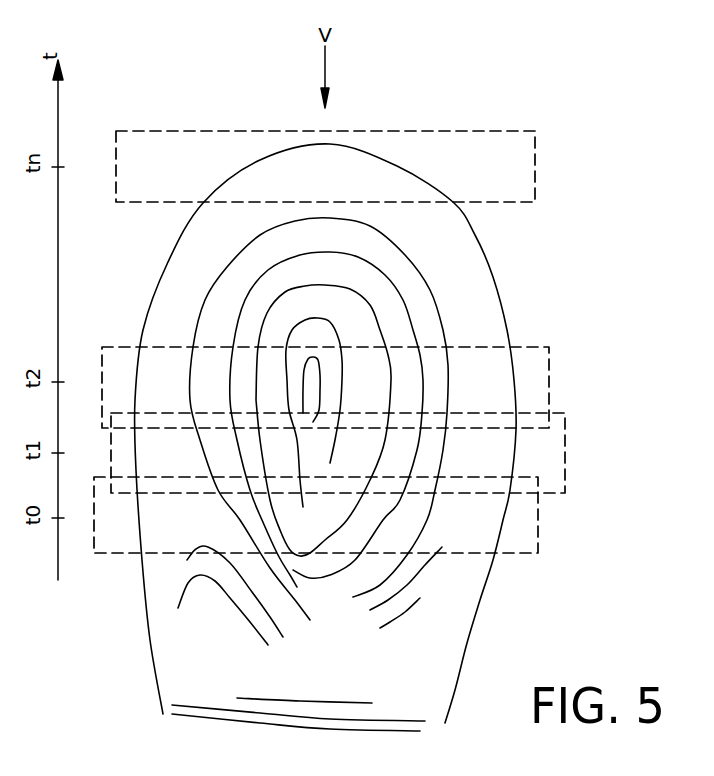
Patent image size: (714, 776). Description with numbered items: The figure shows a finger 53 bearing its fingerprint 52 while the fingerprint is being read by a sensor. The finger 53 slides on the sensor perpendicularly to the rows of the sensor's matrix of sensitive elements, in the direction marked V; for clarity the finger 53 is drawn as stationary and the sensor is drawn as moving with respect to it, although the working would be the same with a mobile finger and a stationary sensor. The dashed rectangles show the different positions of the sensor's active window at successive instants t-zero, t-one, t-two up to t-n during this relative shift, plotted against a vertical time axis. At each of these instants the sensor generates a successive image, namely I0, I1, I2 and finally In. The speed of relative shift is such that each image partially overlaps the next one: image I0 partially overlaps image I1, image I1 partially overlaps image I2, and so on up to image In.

The fingerprint 52 is at (440, 307).
The finger 53 is at (512, 324).
The image In is at (535, 160).
The image I2 is at (549, 371).
The image I1 is at (565, 437).
The image I0 is at (538, 520).